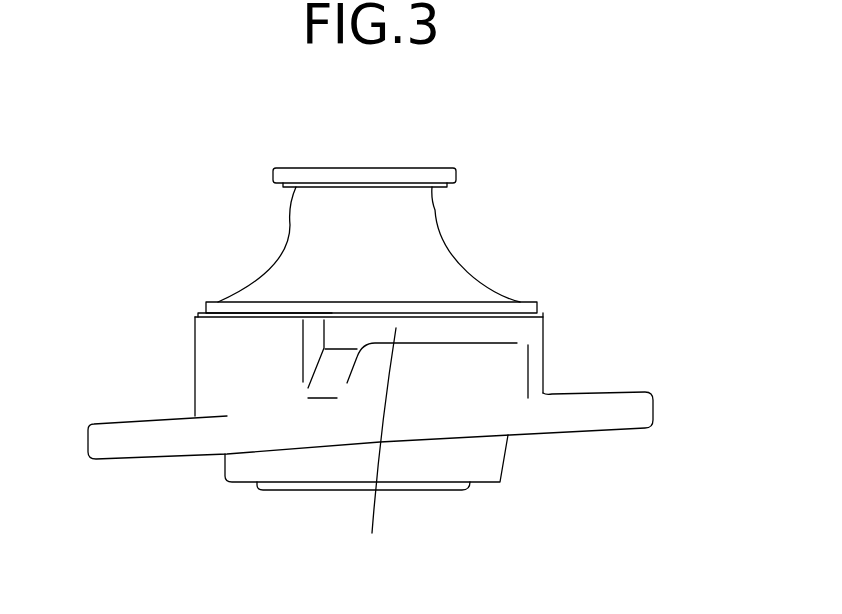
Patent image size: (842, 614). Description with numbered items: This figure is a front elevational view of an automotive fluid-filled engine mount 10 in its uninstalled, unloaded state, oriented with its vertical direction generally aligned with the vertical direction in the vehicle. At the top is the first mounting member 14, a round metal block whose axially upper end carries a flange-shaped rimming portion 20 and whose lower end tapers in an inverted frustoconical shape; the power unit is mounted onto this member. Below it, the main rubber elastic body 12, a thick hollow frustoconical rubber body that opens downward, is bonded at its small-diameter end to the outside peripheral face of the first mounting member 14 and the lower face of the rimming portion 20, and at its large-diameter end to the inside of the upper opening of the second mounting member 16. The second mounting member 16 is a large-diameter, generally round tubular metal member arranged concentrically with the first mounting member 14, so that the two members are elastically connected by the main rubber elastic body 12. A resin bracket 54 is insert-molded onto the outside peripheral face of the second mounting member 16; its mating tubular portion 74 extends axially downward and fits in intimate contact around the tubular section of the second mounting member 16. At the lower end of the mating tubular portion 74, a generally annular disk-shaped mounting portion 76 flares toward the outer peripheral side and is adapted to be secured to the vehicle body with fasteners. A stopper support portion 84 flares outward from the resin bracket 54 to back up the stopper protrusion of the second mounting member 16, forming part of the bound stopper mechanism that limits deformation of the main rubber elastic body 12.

The engine mount 10 is at (213, 205).
The main rubber elastic body 12 is at (432, 265).
The first mounting member 14 is at (445, 168).
The second mounting member 16 is at (505, 468).
The rimming portion 20 is at (290, 175).
The resin bracket 54 is at (195, 380).
The mating tubular portion 74 is at (225, 355).
The mounting portion 76 is at (123, 437).
The stopper support portion 84 is at (376, 445).